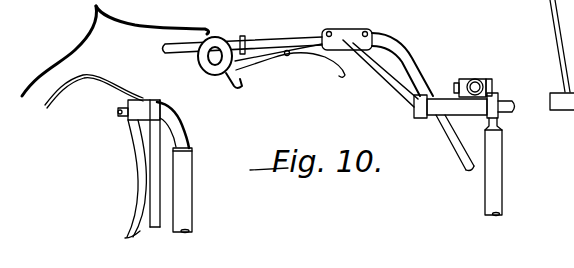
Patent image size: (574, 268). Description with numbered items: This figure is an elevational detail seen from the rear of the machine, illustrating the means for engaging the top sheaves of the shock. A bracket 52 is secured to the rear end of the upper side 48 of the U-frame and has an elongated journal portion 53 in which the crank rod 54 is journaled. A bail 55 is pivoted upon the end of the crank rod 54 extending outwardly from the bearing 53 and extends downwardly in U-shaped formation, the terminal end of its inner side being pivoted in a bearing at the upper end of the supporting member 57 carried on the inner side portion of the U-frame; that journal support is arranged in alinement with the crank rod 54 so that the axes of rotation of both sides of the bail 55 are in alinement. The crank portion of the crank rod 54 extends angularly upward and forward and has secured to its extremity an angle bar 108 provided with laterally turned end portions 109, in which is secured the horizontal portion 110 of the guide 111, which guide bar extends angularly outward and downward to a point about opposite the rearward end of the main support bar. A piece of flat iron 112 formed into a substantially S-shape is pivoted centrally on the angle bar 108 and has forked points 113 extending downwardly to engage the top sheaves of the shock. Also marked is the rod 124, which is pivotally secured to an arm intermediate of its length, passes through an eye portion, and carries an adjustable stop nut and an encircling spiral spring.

The outer side of the frame 48 is at (476, 79).
The bracket 52 is at (491, 84).
The elongated journal portion 53 is at (450, 105).
The crank rod 54 is at (386, 86).
The bail 55 is at (188, 209).
The supporting member 57 is at (128, 237).
The angle bar 108 is at (318, 22).
The laterally turned end portions 109 is at (250, 33).
The horizontal portion 110 is at (193, 25).
The guide 111 is at (421, 74).
The S-shaped piece of flat iron 112 is at (264, 58).
The forked points 113 is at (238, 89).
The rod 124 is at (433, 11).